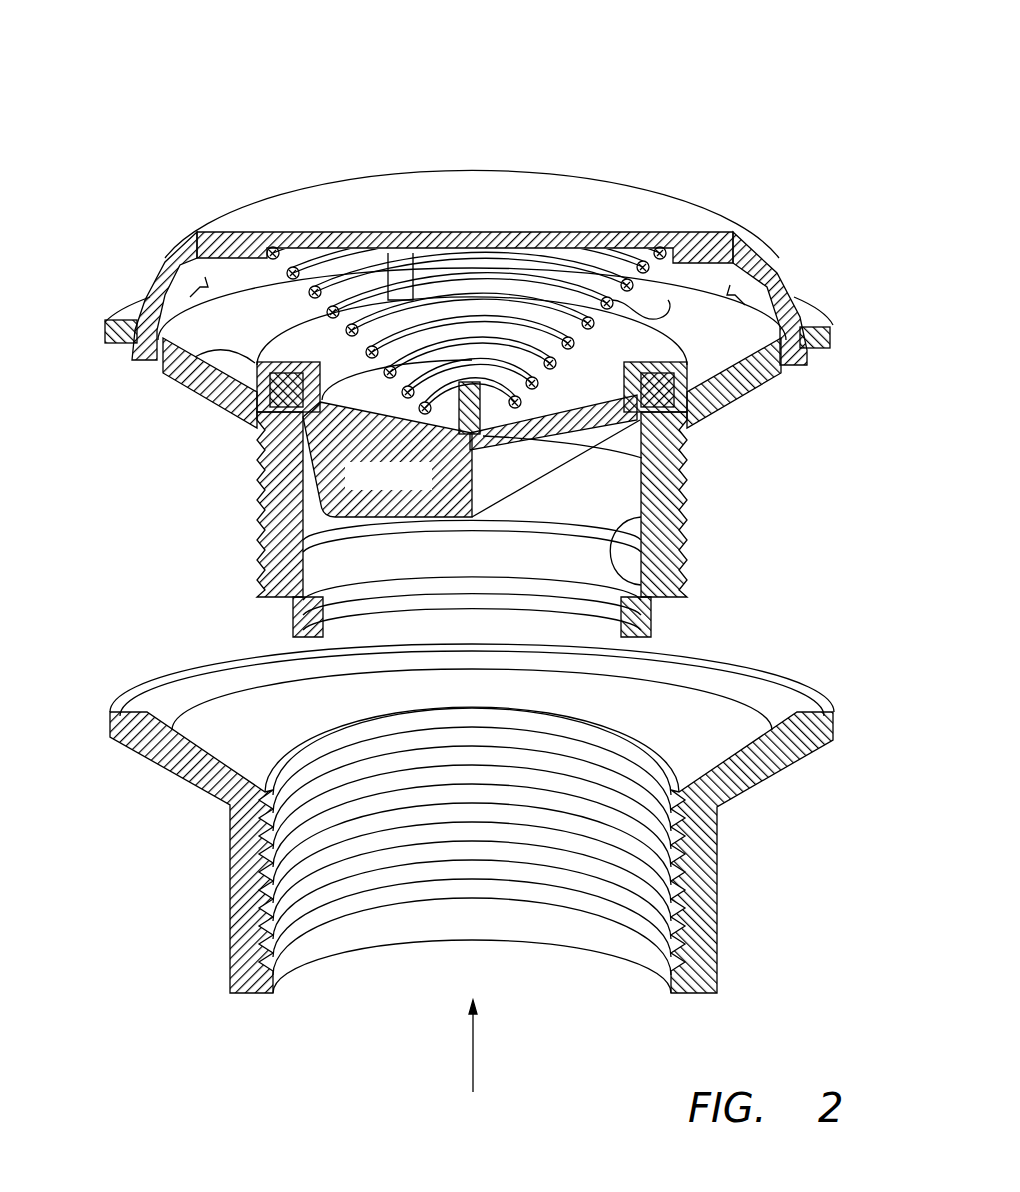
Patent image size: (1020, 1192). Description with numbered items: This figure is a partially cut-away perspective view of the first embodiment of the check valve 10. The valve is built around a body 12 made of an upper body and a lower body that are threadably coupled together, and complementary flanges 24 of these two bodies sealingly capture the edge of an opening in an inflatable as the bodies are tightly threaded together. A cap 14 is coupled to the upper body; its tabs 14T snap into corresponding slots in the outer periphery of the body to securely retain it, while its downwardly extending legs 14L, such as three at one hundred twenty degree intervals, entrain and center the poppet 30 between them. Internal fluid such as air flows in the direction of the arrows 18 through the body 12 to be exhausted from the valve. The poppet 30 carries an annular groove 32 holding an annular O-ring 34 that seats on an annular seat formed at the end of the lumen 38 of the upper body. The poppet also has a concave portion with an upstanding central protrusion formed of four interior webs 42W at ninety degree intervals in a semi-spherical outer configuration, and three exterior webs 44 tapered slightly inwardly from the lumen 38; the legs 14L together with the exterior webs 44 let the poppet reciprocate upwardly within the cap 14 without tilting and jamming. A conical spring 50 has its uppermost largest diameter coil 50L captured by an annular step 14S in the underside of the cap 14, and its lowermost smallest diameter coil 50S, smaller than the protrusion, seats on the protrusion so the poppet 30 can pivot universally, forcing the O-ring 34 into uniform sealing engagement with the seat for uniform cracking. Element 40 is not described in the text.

The check valve 10 is at (455, 95).
The body 12 is at (834, 296).
The cap 14 is at (582, 165).
The downwardly extending legs 14L is at (356, 280).
The annular step 14S is at (244, 235).
The tabs 14T is at (135, 345).
The arrows 18 is at (475, 1060).
The flanges 24 is at (822, 700).
The poppet 30 is at (250, 510).
The annular groove 32 is at (167, 378).
The annular O-ring 34 is at (223, 405).
The lumen 38 is at (660, 592).
The contact block 40 is at (672, 455).
The interior webs 42W is at (260, 450).
The exterior webs 44 is at (577, 503).
The conical spring 50 is at (612, 302).
The uppermost largest diameter coil 50L is at (663, 245).
The lowermost smallest diameter coil 50S is at (683, 517).